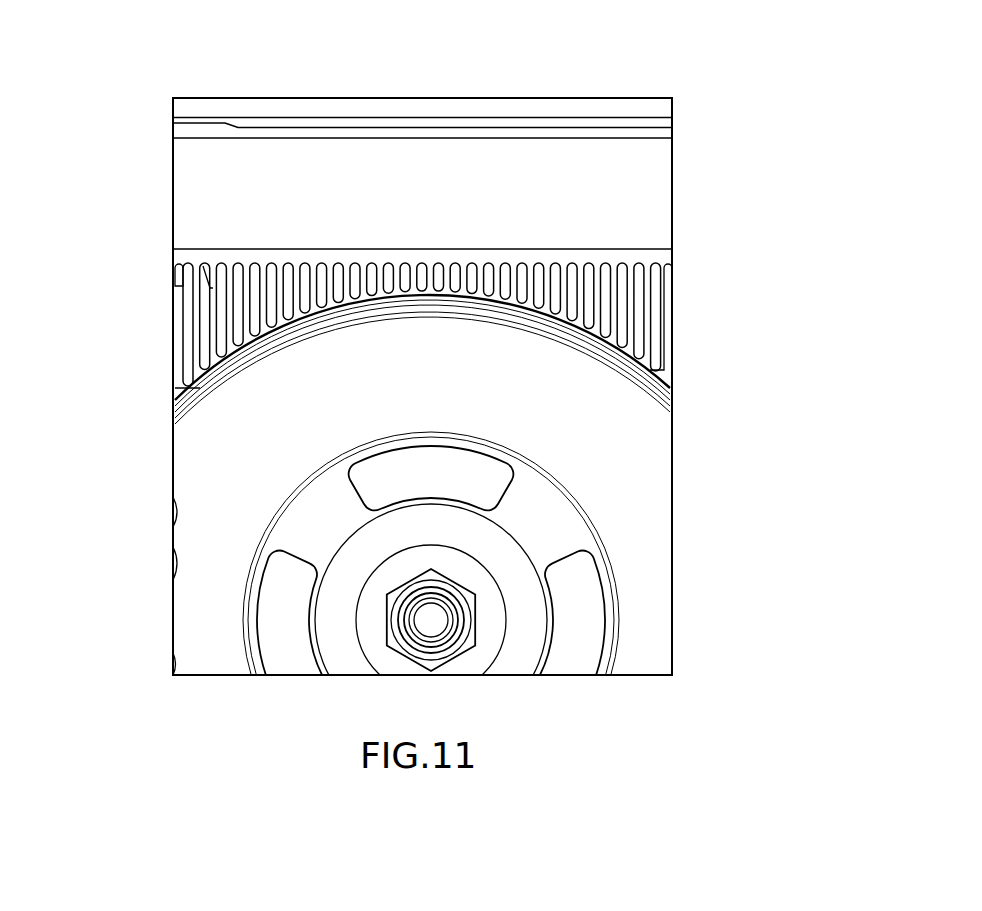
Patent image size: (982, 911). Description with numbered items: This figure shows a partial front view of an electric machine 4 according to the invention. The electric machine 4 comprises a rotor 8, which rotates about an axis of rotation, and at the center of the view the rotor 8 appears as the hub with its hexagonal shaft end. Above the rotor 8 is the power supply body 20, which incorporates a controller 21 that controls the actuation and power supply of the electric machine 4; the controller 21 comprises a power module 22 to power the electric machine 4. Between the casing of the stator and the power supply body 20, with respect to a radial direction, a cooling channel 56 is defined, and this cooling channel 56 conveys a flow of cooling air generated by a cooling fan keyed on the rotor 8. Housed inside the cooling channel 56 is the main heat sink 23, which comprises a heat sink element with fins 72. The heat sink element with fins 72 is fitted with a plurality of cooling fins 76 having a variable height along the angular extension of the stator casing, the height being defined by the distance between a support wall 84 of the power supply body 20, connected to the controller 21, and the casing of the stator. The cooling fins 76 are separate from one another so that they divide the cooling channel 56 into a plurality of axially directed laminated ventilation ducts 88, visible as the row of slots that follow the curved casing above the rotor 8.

The electric machine 4 is at (748, 145).
The rotor 8 is at (460, 622).
The power supply body 20 is at (256, 180).
The controller 21 is at (422, 146).
The power module 22 is at (439, 240).
The main heat sink 23 is at (422, 216).
The heat sink element with fins 72 is at (482, 248).
The cooling channel 56 is at (662, 317).
The cooling fins 76 is at (578, 266).
The support wall 84 is at (212, 246).
The axially directed laminated ventilation ducts 88 is at (365, 270).